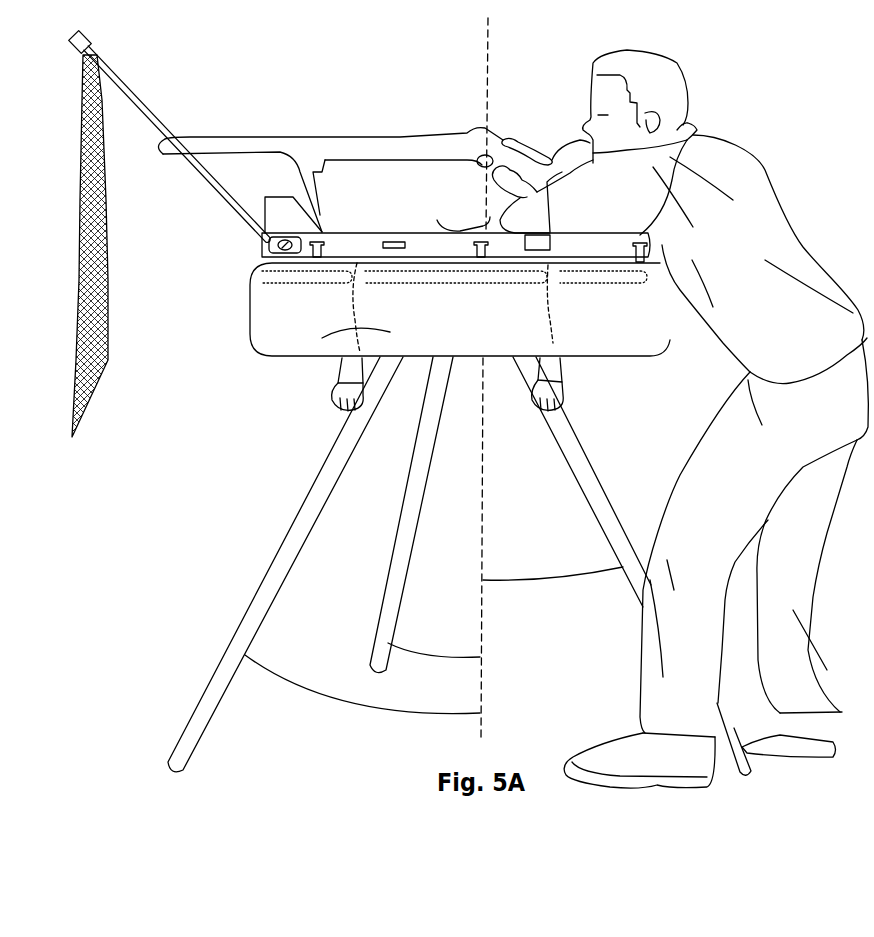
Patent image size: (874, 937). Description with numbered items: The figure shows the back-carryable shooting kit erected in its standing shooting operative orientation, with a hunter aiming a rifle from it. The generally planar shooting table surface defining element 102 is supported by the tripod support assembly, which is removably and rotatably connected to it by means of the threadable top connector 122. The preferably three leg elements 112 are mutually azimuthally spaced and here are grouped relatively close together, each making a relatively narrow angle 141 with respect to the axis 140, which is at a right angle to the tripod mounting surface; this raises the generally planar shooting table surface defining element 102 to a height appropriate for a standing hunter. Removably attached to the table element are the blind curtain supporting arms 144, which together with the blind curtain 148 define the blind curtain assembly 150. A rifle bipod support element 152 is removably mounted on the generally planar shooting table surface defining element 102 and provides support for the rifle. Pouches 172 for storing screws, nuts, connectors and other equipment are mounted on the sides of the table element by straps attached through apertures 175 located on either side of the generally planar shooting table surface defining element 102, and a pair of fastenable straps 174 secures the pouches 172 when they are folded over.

The generally planar shooting table surface defining element 102 is at (430, 238).
The leg elements 112 is at (587, 502).
The top connector 122 is at (465, 222).
The axis 140 is at (502, 56).
The angle 141 is at (434, 648).
The blind curtain supporting arms 144 is at (212, 188).
The blind curtain 148 is at (72, 397).
The blind curtain assembly 150 is at (144, 243).
The rifle bipod support element 152 is at (300, 220).
The pouches 172 is at (270, 340).
The fastenable straps 174 is at (330, 398).
The apertures 175 is at (393, 240).